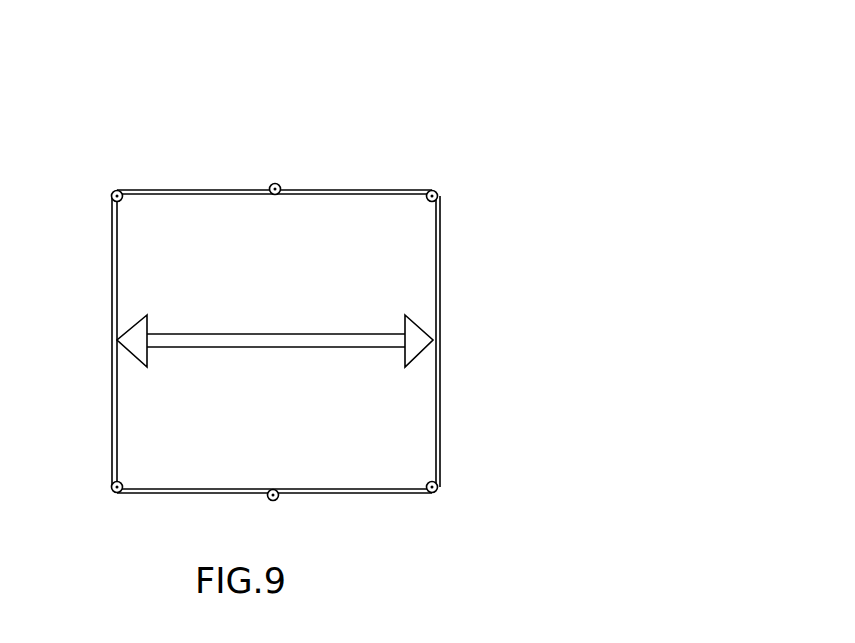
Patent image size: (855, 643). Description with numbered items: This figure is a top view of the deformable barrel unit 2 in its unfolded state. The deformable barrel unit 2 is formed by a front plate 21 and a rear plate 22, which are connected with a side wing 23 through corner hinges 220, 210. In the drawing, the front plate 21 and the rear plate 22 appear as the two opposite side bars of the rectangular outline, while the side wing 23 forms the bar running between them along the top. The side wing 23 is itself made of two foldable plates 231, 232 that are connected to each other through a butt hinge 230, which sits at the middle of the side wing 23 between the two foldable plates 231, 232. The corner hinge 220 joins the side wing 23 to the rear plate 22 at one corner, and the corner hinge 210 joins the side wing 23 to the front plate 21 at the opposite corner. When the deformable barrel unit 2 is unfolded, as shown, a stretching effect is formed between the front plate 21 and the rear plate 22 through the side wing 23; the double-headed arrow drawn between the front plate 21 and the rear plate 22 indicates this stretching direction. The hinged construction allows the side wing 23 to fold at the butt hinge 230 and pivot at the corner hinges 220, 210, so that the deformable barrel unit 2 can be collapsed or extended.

The deformable barrel unit 2 is at (308, 266).
The front plate 21 is at (438, 283).
The rear plate 22 is at (113, 385).
The side wing 23 is at (274, 113).
The butt hinge 230 is at (279, 183).
The foldable plate 231 is at (204, 190).
The foldable plate 232 is at (377, 188).
The corner hinge 220 is at (115, 190).
The corner hinge 210 is at (437, 190).